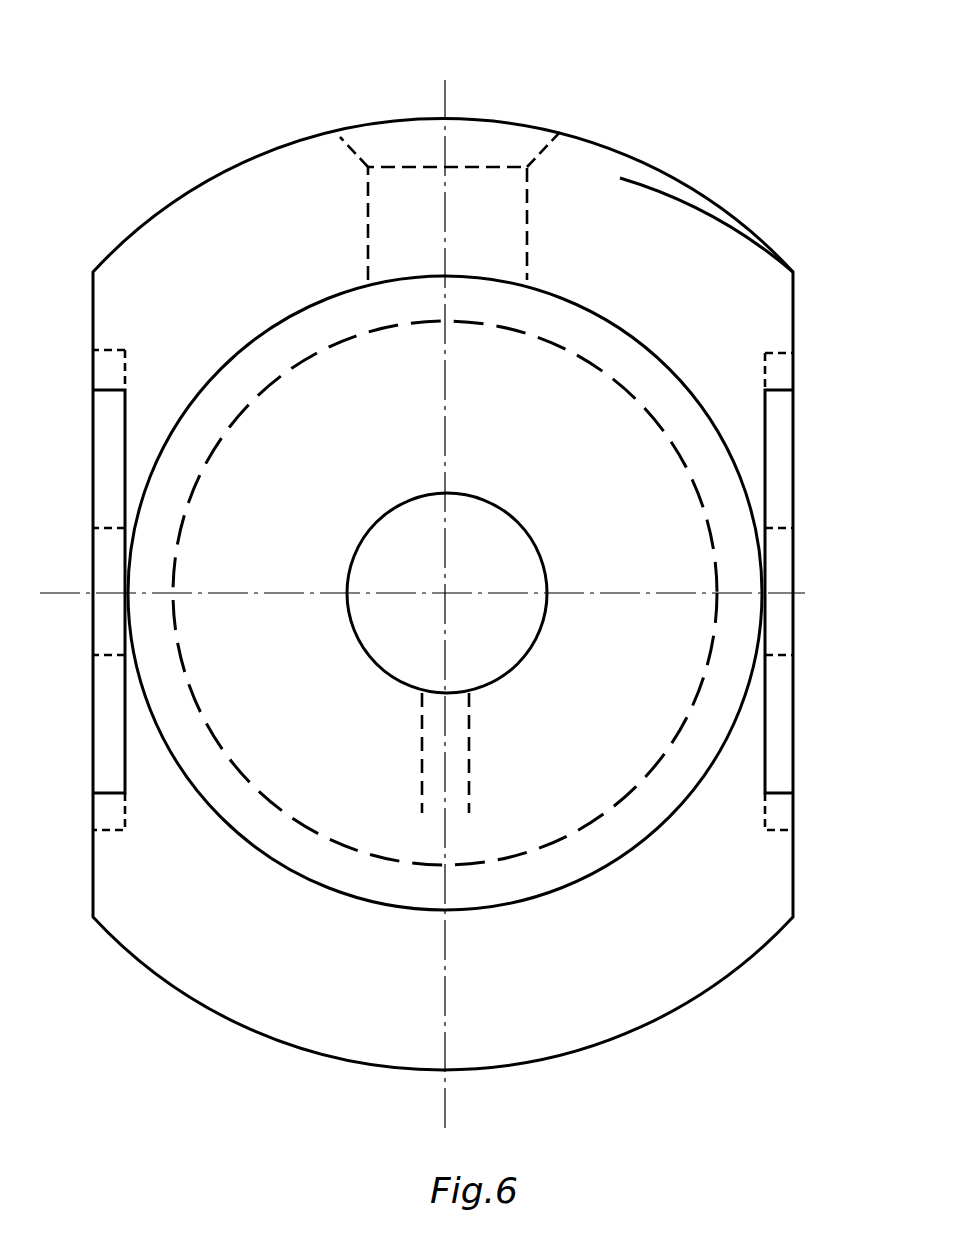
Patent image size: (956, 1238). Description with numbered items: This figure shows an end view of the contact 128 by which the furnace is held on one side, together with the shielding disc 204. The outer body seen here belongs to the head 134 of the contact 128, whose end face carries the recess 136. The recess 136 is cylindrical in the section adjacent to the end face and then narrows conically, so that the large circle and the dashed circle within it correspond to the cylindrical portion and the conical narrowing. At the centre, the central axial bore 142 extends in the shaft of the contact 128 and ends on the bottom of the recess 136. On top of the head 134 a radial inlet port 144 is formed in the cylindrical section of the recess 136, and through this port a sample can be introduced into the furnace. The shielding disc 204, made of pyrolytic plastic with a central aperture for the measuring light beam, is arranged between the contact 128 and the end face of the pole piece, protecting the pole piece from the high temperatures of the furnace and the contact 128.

The contact 128 is at (652, 158).
The head 134 is at (728, 232).
The radial inlet port 144 is at (492, 185).
The shielding disc 204 is at (773, 465).
The recess 136 is at (683, 640).
The central axial bore 142 is at (395, 647).